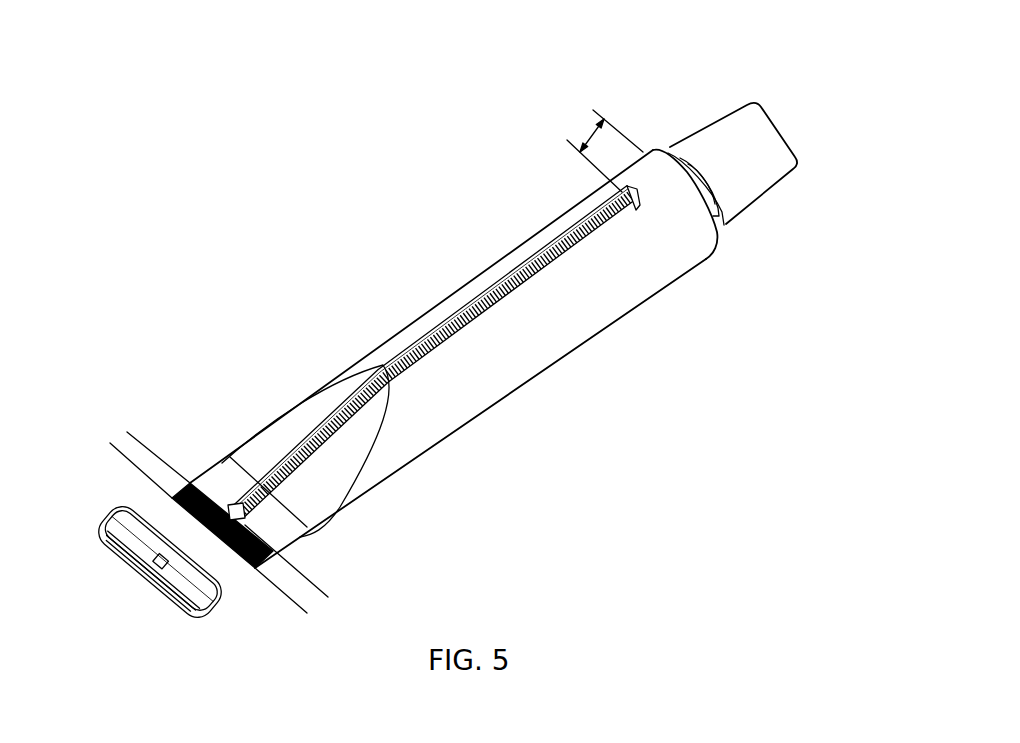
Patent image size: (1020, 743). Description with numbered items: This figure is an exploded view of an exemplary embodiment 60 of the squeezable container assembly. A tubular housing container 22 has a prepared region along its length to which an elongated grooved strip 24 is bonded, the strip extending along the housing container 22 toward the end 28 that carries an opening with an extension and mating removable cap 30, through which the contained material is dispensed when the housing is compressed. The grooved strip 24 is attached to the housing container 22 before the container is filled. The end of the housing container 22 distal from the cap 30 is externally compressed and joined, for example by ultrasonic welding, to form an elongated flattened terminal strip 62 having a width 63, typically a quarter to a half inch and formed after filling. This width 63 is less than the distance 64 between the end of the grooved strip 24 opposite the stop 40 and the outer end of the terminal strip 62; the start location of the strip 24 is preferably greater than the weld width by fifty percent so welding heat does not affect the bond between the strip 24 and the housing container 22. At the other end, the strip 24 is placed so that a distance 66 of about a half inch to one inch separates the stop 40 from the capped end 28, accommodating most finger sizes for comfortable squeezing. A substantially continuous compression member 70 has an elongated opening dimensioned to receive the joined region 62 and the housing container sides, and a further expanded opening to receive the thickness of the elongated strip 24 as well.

The tubular housing container 22 is at (590, 315).
The elongated grooved strip 24 is at (467, 297).
The housing container end 28 is at (720, 231).
The removable cap 30 is at (768, 190).
The stop 40 is at (620, 189).
The exemplary embodiment 60 is at (711, 93).
The elongated flattened terminal strip 62 is at (188, 481).
The width of terminal strip 63 is at (152, 422).
The distance 64 is at (273, 615).
The distance 66 is at (613, 108).
The compression member 70 is at (113, 608).